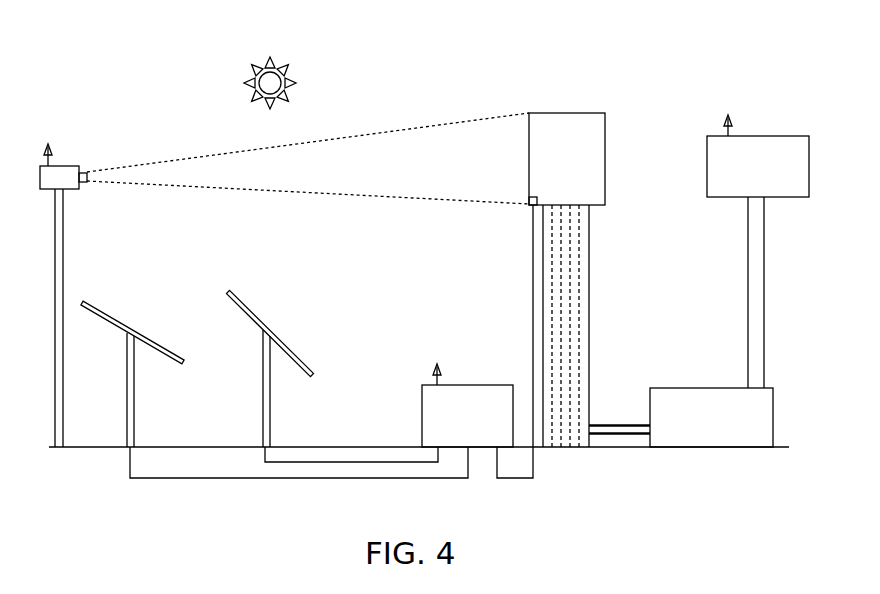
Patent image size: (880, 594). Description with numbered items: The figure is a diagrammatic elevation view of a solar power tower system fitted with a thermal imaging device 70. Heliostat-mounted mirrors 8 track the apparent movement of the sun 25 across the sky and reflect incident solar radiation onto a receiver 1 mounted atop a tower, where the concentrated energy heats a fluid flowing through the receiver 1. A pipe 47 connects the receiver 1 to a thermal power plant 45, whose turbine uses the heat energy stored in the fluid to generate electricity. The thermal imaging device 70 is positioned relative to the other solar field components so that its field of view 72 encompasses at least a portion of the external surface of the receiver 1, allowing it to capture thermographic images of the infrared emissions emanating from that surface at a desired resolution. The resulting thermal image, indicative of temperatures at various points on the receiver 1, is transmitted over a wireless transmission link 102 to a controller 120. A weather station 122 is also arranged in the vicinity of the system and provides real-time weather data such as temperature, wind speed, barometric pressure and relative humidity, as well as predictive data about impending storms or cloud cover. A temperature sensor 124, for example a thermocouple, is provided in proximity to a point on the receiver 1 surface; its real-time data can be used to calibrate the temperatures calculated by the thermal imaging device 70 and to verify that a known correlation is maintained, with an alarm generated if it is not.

The receiver 1 is at (584, 135).
The mirrors 8 is at (197, 353).
The sun 25 is at (285, 60).
The thermal power plant 45 is at (711, 385).
The pipe 47 is at (621, 390).
The thermal imaging device 70 is at (84, 306).
The field of view 72 is at (308, 131).
The wireless transmission link 102 is at (414, 221).
The controller 120 is at (467, 377).
The weather station 122 is at (740, 262).
The temperature sensor 124 is at (503, 235).